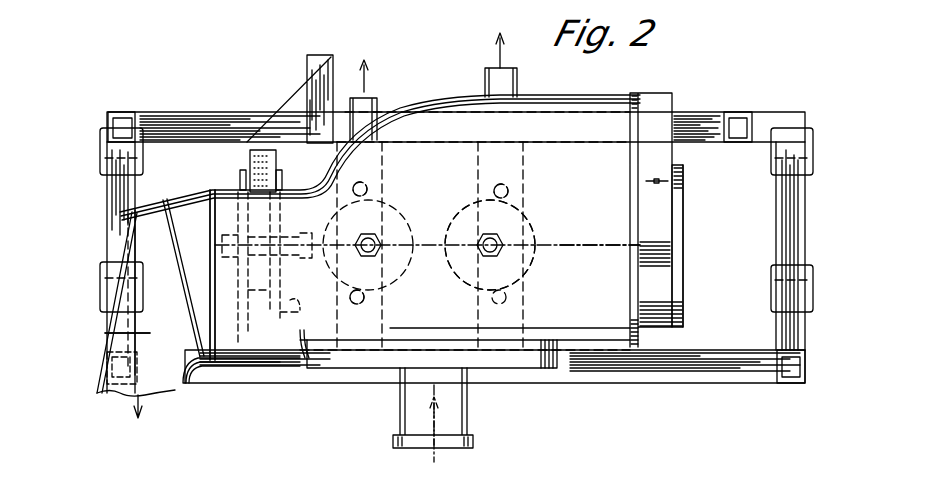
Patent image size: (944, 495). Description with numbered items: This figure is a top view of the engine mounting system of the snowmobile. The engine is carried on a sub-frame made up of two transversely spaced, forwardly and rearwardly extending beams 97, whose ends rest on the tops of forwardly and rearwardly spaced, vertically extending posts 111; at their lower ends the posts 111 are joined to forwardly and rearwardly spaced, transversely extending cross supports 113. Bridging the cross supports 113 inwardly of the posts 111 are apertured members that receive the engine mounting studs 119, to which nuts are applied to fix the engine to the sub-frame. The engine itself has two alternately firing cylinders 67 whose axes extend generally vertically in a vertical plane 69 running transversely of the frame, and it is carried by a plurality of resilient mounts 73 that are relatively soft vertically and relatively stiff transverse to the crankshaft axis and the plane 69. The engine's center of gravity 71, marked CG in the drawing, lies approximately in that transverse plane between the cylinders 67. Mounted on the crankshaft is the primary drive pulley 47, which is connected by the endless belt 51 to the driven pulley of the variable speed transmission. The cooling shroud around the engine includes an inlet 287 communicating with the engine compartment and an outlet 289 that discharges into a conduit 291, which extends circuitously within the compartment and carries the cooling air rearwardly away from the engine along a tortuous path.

The post 111 is at (133, 112).
The cross support 113 is at (213, 118).
The resilient mount 73 is at (103, 143).
The beam 97 is at (113, 192).
The endless belt 51 is at (250, 160).
The engine mounting stud 119 is at (368, 186).
The center of gravity CG is at (439, 244).
The center of gravity 71 is at (477, 245).
The cylinder 67 is at (402, 296).
The vertical plane 69 is at (600, 240).
The inlet 287 is at (707, 246).
The conduit 291 is at (148, 333).
The outlet 289 is at (215, 360).
The primary drive pulley 47 is at (292, 312).